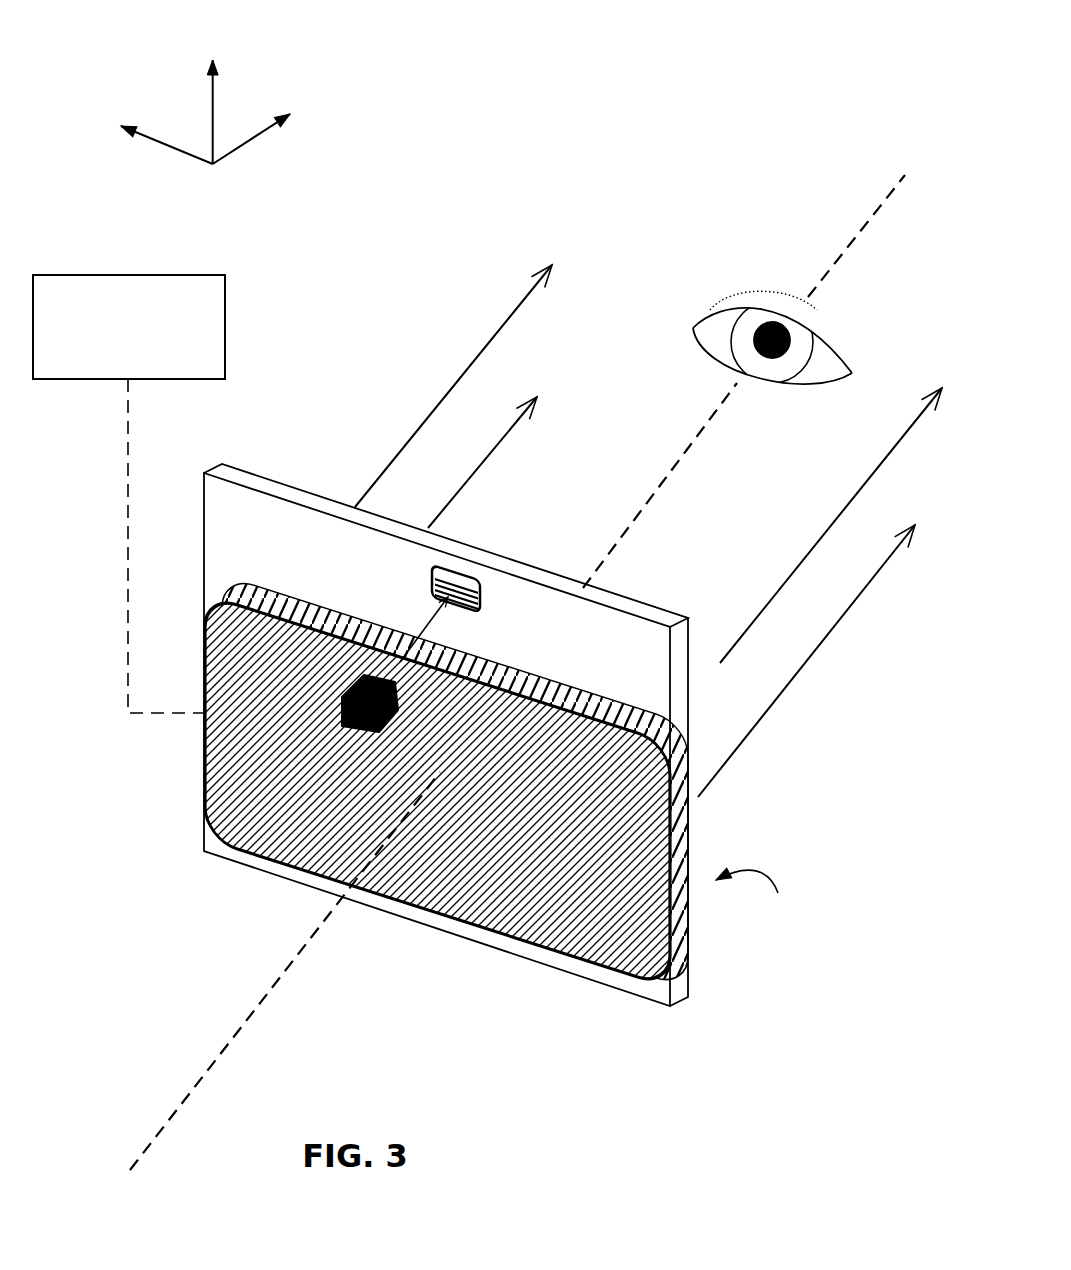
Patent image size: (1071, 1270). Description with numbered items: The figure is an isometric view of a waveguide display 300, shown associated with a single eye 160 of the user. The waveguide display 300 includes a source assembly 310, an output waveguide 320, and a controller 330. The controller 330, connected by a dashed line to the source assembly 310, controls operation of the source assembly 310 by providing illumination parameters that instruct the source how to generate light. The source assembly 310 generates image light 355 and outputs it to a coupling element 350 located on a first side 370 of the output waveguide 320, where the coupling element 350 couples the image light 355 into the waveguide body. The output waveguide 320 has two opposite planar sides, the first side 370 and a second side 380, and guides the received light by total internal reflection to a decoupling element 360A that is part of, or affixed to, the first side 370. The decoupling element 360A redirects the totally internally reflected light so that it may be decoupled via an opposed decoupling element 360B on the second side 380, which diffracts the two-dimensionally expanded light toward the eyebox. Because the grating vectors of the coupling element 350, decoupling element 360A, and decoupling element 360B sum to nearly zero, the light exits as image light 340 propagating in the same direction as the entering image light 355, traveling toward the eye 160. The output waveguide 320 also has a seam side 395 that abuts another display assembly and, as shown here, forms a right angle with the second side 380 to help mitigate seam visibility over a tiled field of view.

The waveguide display 300 is at (72, 49).
The source assembly 310 is at (388, 724).
The output waveguide 320 is at (653, 647).
The controller 330 is at (186, 494).
The image light 340 is at (477, 354).
The coupling element 350 is at (433, 567).
The image light 355 is at (430, 623).
The decoupling element 360A is at (290, 838).
The decoupling element 360B is at (683, 818).
The first side 370 is at (620, 983).
The second side 380 is at (796, 912).
The seam side 395 is at (690, 992).
The eye 160 is at (817, 505).